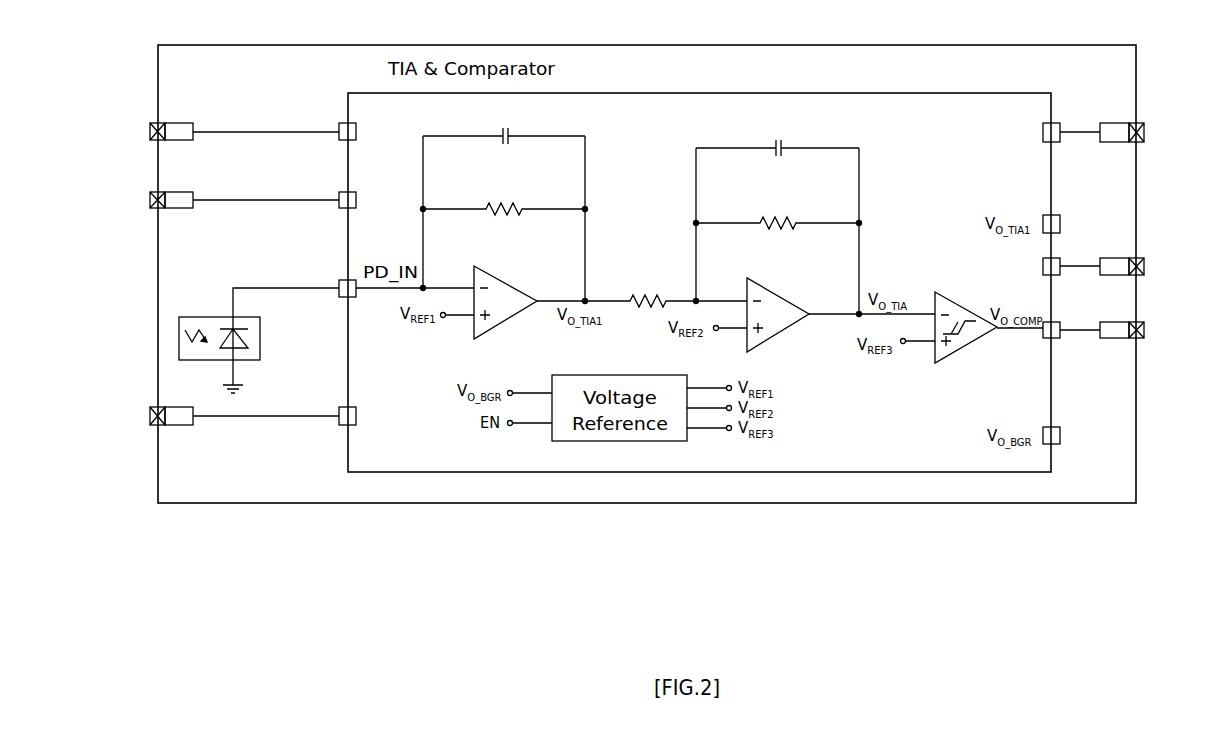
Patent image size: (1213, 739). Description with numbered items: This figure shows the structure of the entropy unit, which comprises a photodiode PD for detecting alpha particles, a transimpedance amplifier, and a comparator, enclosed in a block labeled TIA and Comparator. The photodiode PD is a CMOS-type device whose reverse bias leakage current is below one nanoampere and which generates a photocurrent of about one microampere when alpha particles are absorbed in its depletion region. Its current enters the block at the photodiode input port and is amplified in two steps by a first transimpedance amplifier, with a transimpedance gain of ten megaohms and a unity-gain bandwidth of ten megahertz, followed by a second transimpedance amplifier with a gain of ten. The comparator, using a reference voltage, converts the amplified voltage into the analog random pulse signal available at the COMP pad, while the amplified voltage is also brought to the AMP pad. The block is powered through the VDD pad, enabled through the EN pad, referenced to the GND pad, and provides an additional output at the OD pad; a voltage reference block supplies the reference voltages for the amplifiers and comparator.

The photodiode PD is at (259, 340).
The supply voltage pad VDD is at (260, 133).
The enable pad EN is at (257, 202).
The ground pad GND is at (259, 417).
The output driver pad OD is at (1085, 134).
The amplifier output pad AMP is at (1084, 268).
The comparator output pad COMP is at (1116, 331).